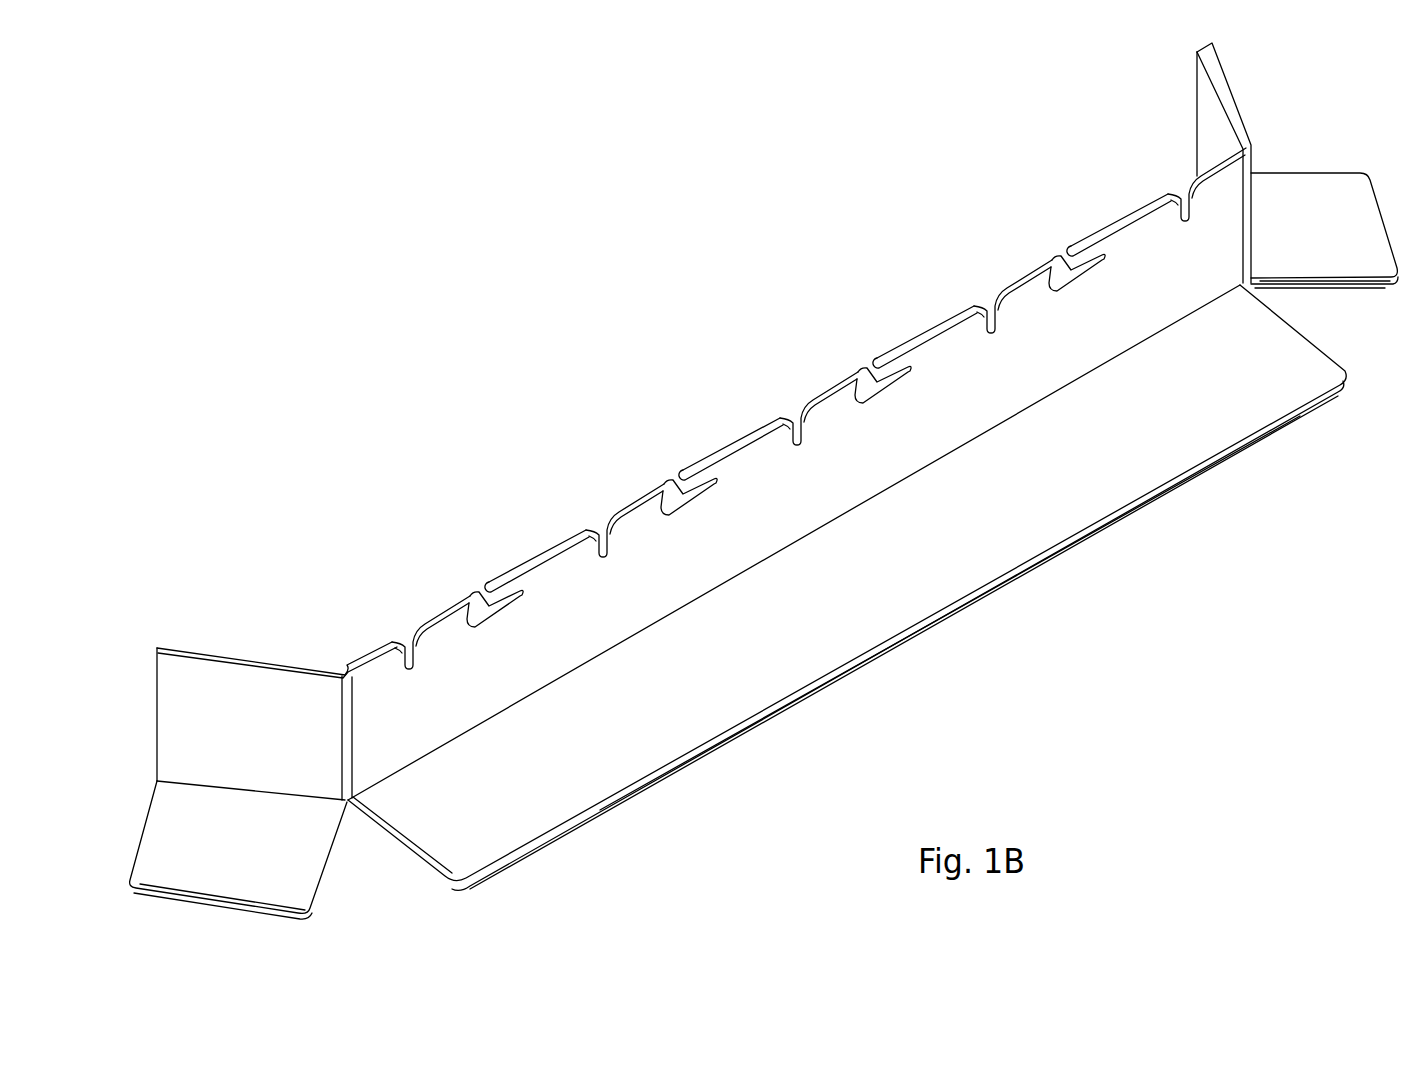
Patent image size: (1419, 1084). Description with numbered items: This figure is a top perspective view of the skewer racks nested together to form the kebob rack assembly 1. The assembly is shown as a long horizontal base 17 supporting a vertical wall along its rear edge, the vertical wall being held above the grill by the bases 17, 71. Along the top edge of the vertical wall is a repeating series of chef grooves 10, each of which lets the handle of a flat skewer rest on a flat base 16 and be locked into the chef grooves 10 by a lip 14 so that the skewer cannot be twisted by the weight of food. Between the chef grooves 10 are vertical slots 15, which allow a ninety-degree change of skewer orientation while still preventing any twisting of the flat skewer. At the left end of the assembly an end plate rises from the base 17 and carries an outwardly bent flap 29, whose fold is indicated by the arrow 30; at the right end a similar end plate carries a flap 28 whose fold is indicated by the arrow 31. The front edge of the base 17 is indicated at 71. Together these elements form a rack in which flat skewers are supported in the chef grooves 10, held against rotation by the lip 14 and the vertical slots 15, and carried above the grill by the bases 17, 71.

The kebob rack assembly 1 is at (708, 226).
The chef grooves 10 is at (651, 483).
The lip 14 is at (713, 464).
The vertical slots 15 is at (601, 517).
The flat base 16 is at (514, 578).
The base 17 is at (1098, 482).
The right end flap 28 is at (1313, 203).
The left end flap 29 is at (185, 837).
The left flap fold 30 is at (224, 921).
The right flap fold 31 is at (1308, 305).
The base 71 is at (824, 689).